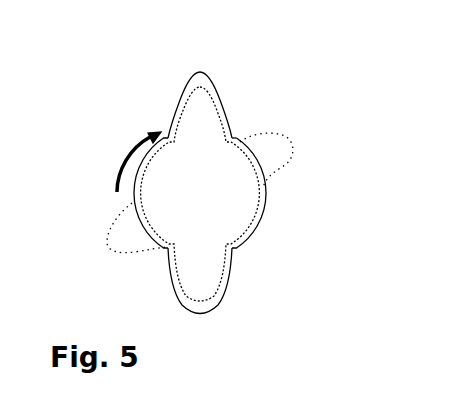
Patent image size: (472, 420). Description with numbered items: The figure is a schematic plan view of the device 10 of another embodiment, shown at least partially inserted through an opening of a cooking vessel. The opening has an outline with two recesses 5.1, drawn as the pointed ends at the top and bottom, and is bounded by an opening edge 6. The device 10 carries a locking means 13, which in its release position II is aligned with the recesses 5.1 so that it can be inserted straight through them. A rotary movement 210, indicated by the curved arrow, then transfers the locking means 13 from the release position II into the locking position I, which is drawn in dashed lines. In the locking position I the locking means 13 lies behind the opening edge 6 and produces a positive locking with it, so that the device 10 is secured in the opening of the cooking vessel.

The recesses 5.1 is at (188, 90).
The opening edge 6 is at (238, 243).
The device 10 is at (238, 243).
The locking means 13 is at (227, 112).
The rotary movement 210 is at (117, 162).
The locking position I is at (293, 126).
The release position II is at (226, 86).